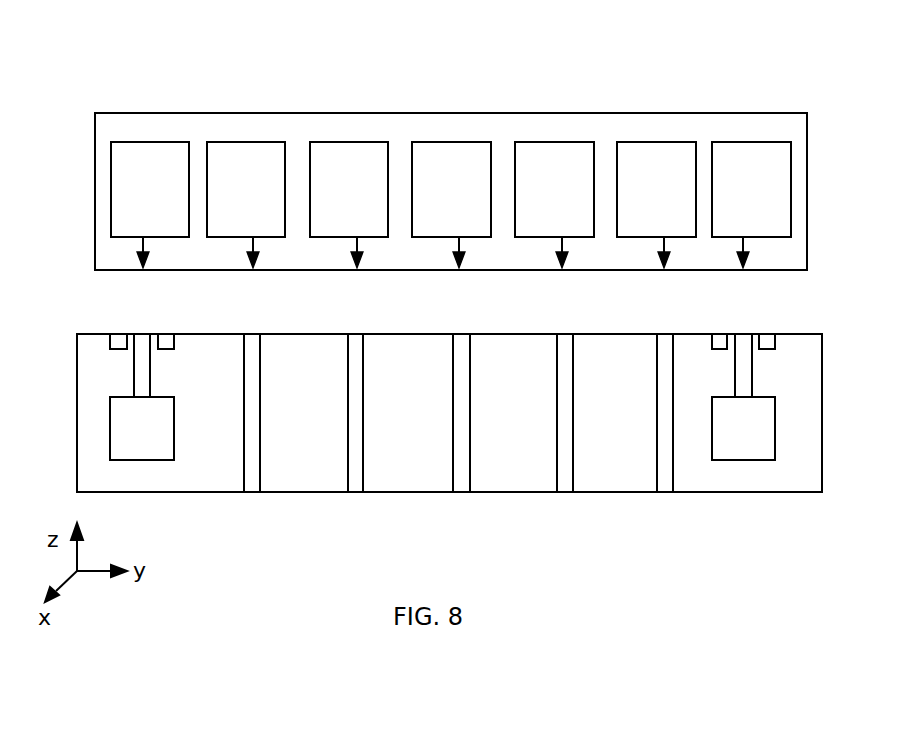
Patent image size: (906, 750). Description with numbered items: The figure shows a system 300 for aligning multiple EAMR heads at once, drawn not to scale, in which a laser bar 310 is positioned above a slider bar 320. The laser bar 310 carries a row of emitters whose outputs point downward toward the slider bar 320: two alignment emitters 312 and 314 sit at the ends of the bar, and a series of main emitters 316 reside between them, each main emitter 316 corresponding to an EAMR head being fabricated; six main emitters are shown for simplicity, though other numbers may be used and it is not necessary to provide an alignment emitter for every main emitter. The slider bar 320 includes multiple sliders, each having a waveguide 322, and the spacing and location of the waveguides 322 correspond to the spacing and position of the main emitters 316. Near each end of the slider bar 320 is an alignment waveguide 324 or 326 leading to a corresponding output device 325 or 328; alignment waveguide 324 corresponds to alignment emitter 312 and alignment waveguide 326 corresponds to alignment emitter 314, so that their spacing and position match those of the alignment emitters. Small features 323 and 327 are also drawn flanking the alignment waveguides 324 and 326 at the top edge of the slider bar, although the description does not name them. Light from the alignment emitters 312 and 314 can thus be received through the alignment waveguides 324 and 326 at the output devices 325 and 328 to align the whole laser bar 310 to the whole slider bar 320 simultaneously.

The system 300 is at (445, 61).
The laser bar 310 is at (137, 112).
The alignment emitter 312 is at (110, 207).
The alignment emitter 314 is at (742, 142).
The main emitters 316 is at (647, 142).
The slider bar 320 is at (77, 460).
The waveguide 322 is at (662, 492).
The alignment marks 323 is at (113, 334).
The alignment waveguide 324 is at (134, 380).
The output device 325 is at (110, 443).
The alignment waveguide 326 is at (735, 382).
The alignment marks 327 is at (767, 334).
The output device 328 is at (725, 460).